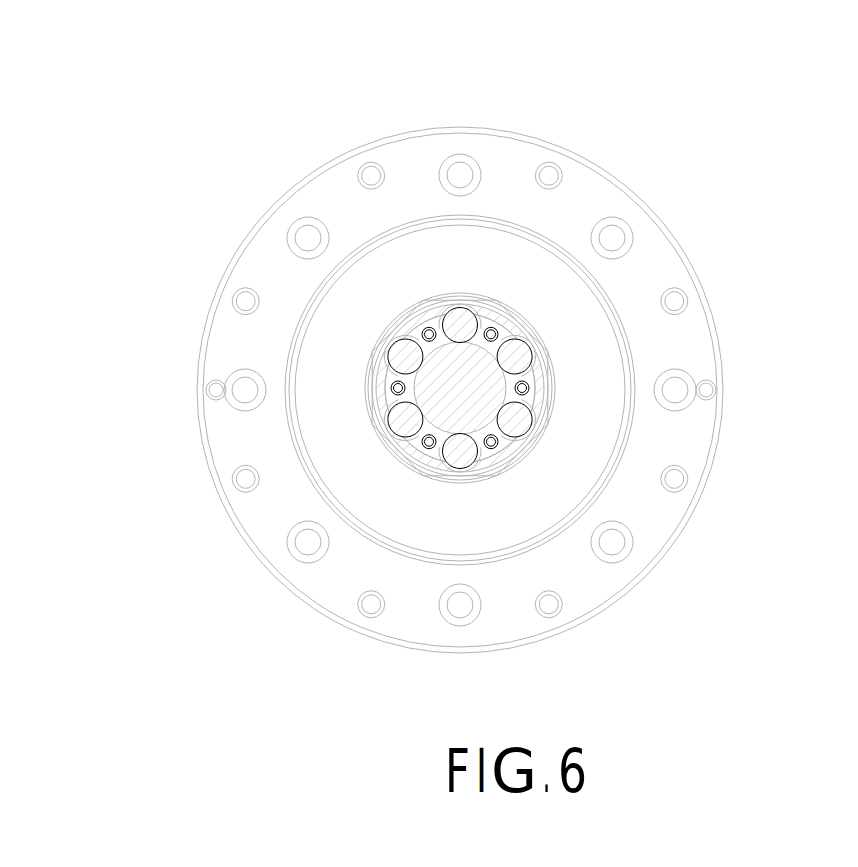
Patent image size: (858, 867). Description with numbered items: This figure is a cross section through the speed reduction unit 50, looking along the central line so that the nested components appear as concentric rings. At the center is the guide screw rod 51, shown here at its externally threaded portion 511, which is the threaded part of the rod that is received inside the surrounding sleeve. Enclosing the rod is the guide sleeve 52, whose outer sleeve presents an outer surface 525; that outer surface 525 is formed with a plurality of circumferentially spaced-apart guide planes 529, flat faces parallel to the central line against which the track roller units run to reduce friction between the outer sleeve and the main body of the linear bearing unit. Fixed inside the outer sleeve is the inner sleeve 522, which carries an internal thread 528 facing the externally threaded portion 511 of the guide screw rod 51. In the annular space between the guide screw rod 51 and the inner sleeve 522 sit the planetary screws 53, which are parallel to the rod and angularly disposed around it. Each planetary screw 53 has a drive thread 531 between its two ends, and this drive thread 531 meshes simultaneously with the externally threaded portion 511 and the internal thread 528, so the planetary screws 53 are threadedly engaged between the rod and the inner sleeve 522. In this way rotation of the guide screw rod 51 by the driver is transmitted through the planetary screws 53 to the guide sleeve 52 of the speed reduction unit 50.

The speed reduction unit 50 is at (507, 457).
The guide screw rod 51 is at (482, 368).
The guide sleeve 52 is at (504, 300).
The outer surface 525 is at (460, 388).
The guide planes 529 is at (458, 300).
The externally threaded portion 511 is at (442, 353).
The planetary screws 53 is at (518, 352).
The drive thread 531 is at (445, 327).
The inner sleeve 522 is at (545, 362).
The internal thread 528 is at (538, 395).